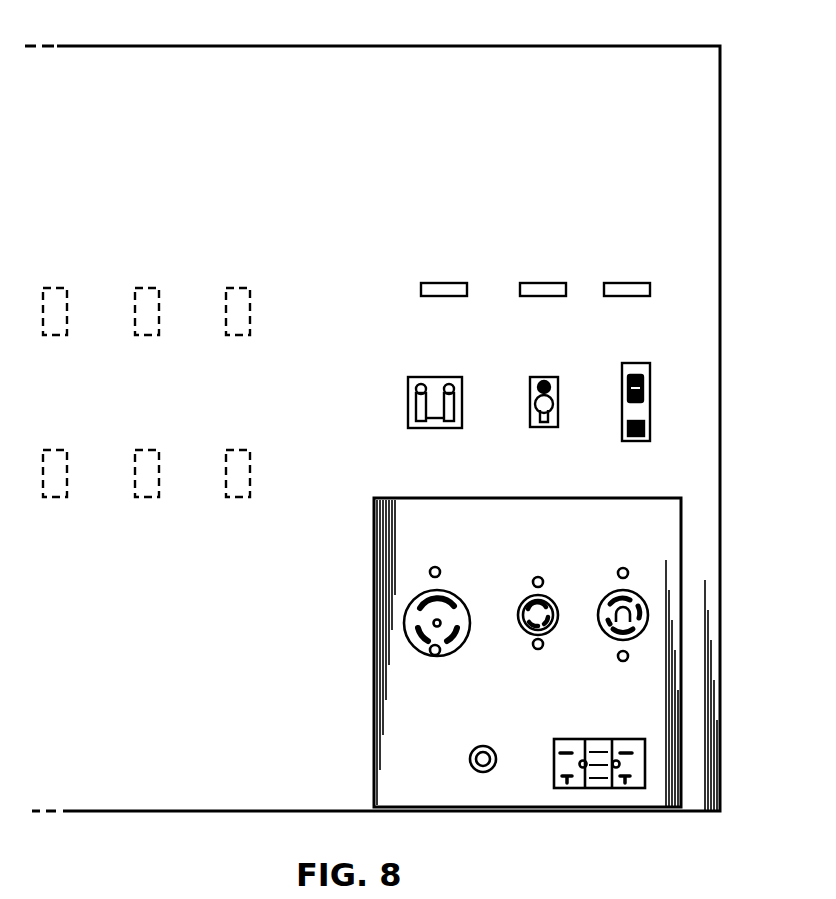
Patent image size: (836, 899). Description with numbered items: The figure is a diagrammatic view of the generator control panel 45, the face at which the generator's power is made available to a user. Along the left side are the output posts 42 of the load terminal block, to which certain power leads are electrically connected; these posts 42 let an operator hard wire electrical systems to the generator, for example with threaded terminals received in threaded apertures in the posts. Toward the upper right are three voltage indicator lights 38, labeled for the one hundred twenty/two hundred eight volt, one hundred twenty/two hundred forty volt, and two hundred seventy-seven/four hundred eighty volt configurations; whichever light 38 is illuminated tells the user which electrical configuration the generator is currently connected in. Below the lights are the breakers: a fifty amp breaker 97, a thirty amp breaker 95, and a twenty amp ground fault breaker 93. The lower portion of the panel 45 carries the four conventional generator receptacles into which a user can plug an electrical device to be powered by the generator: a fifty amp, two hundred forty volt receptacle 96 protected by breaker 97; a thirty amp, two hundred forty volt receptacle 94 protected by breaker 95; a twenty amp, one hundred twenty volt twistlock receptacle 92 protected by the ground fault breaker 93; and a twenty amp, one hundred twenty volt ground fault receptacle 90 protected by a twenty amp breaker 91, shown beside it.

The control panel 45 is at (566, 44).
The output posts 42 is at (244, 284).
The voltage indicator lights 38 is at (648, 283).
The fifty amp breaker 97 is at (408, 399).
The thirty amp breaker 95 is at (538, 428).
The twenty amp ground fault breaker 93 is at (650, 410).
The fifty amp receptacle 96 is at (452, 592).
The thirty amp receptacle 94 is at (553, 598).
The twistlock receptacle 92 is at (640, 597).
The twenty amp breaker 91 is at (494, 768).
The ground fault receptacle 90 is at (618, 788).